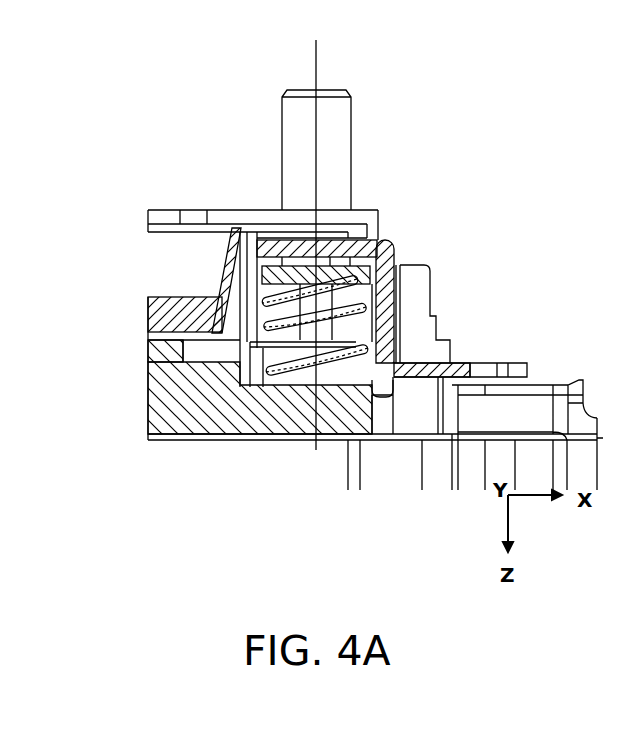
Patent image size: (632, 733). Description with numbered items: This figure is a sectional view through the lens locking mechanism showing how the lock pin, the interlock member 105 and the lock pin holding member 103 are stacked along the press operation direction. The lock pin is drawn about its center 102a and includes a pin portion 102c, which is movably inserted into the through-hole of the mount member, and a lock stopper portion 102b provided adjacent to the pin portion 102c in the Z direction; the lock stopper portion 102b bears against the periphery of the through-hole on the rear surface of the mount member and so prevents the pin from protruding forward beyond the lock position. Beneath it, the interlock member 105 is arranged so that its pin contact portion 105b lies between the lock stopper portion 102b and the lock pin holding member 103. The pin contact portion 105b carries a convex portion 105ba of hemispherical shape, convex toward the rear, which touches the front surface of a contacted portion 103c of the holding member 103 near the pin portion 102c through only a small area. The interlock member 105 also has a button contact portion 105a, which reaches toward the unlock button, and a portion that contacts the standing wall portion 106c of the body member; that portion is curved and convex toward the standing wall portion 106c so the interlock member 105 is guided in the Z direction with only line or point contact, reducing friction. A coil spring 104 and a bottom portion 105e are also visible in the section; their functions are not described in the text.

The center of the lock pin 102a is at (350, 130).
The lock stopper portion 102b is at (357, 207).
The pin portion 102c is at (308, 253).
The lock pin holding member 103 is at (285, 285).
The contacted portion 103c is at (283, 268).
The coil spring 104 is at (306, 443).
The interlock member 105 is at (382, 240).
The button contact portion 105a is at (517, 362).
The pin contact portion 105b is at (287, 283).
The convex portion 105ba is at (320, 262).
The bottom portion of support member 105e is at (373, 337).
The standing wall portion 106c is at (407, 292).